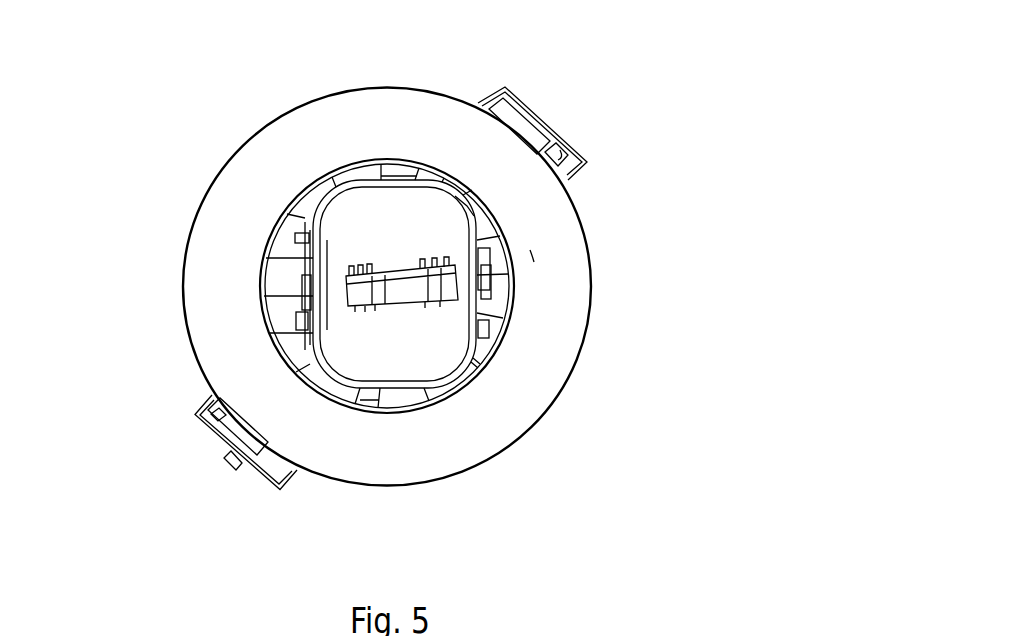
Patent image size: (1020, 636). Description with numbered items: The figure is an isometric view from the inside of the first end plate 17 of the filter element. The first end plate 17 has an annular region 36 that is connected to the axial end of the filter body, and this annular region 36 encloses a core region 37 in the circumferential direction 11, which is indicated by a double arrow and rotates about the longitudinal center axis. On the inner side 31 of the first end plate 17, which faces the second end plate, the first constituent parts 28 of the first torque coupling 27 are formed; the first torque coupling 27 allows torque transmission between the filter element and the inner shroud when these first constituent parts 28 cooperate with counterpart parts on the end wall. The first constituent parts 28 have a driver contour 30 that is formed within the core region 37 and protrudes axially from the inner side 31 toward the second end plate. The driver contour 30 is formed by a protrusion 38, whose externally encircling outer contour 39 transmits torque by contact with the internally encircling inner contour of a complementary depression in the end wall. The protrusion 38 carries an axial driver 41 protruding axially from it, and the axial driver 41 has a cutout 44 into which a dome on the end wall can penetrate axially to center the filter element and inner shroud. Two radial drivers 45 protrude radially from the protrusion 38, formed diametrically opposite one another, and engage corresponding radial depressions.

The circumferential direction 11 is at (267, 85).
The first end plate 17 is at (583, 345).
The first torque coupling 27 is at (648, 245).
The first constituent parts 28 is at (557, 254).
The driver contour 30 is at (476, 220).
The inner side 31 is at (406, 132).
The annular region 36 is at (507, 405).
The core region 37 is at (295, 348).
The protrusion 38 is at (405, 370).
The outer contour 39 is at (308, 242).
The axial driver 41 is at (408, 265).
The cutout 44 is at (404, 291).
The radial drivers 45 is at (302, 305).